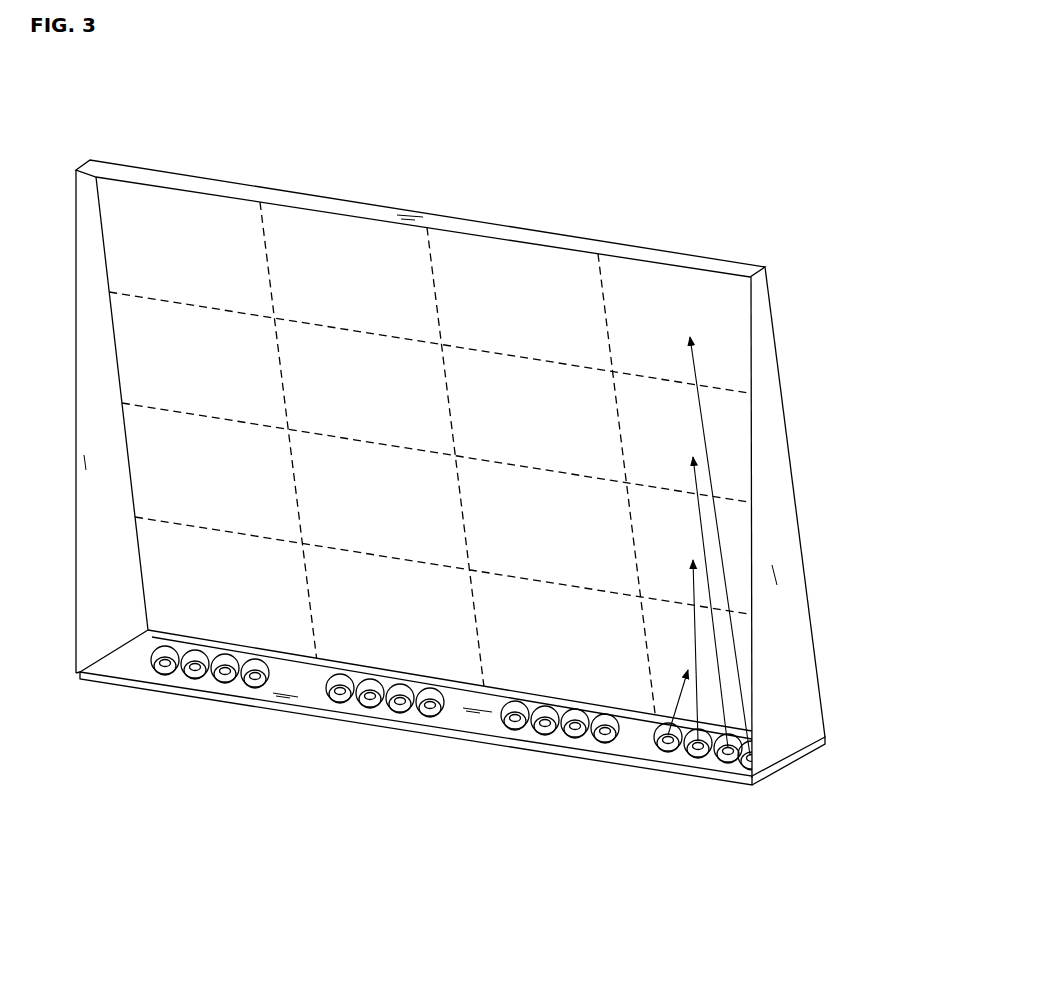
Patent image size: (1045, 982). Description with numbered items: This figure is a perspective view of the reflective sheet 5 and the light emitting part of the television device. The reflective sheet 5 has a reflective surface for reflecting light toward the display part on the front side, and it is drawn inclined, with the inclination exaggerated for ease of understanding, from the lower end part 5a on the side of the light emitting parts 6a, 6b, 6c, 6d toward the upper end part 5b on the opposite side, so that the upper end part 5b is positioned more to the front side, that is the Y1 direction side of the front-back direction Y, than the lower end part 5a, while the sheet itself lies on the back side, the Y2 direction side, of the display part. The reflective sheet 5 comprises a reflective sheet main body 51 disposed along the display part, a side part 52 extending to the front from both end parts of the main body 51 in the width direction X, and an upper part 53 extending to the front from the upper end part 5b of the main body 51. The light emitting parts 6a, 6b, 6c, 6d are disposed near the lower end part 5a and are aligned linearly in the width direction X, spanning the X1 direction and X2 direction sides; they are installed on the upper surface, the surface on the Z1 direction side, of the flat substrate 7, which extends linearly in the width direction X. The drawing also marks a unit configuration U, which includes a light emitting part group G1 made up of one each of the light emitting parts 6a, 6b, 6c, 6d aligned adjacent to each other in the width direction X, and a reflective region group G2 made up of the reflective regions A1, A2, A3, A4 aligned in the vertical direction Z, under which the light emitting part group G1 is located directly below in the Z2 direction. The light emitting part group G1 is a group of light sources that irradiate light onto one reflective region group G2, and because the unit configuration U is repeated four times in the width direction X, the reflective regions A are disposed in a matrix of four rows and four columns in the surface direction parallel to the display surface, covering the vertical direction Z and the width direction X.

The reflective sheet 5 is at (190, 165).
The lower end part 5a is at (292, 656).
The upper end part 5b is at (685, 255).
The reflective sheet main body 51 is at (460, 250).
The side part 52 is at (73, 209).
The upper part 53 is at (600, 245).
The substrate 7 is at (130, 690).
The light emitting part 6a is at (655, 743).
The light emitting part 6b is at (687, 750).
The light emitting part 6c is at (717, 757).
The light emitting part 6d is at (745, 763).
The reflective regions A is at (103, 352).
The reflective region A1 is at (743, 662).
The reflective region A2 is at (737, 550).
The reflective region A3 is at (740, 448).
The reflective region A4 is at (743, 360).
The unit configuration U is at (201, 712).
The light emitting part group G1 is at (582, 843).
The reflective region group G2 is at (768, 843).
The width direction X is at (390, 902).
The X1 direction X1 is at (295, 849).
The X2 direction X2 is at (402, 866).
The front-back direction Y is at (947, 922).
The Y1 direction Y1 is at (883, 918).
The Y2 direction Y2 is at (932, 888).
The vertical direction Z is at (852, 300).
The Z1 direction Z1 is at (818, 305).
The Z2 direction Z2 is at (818, 355).